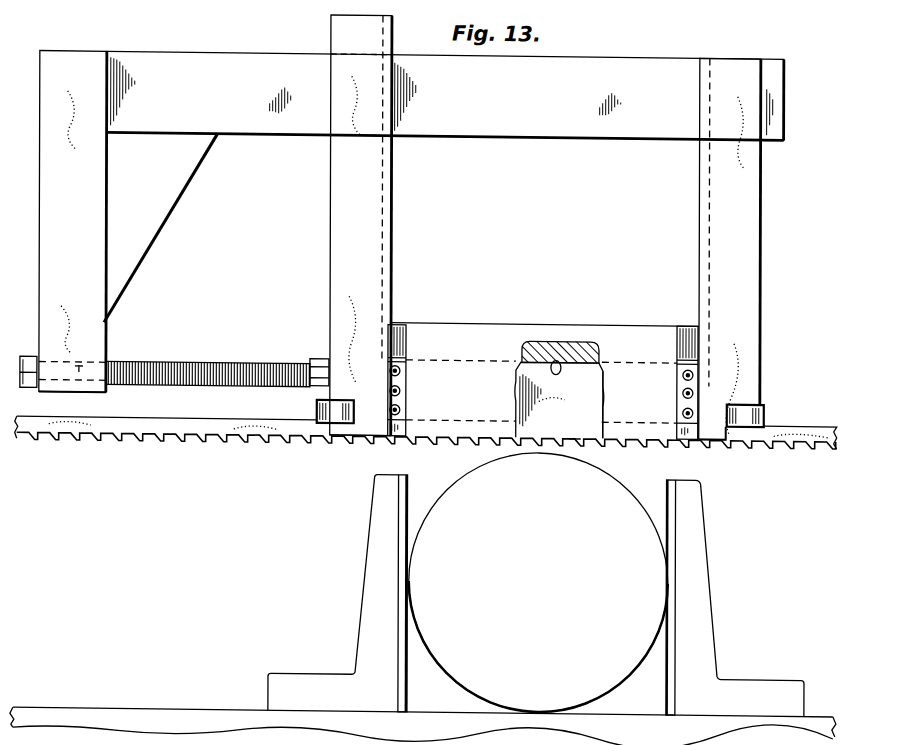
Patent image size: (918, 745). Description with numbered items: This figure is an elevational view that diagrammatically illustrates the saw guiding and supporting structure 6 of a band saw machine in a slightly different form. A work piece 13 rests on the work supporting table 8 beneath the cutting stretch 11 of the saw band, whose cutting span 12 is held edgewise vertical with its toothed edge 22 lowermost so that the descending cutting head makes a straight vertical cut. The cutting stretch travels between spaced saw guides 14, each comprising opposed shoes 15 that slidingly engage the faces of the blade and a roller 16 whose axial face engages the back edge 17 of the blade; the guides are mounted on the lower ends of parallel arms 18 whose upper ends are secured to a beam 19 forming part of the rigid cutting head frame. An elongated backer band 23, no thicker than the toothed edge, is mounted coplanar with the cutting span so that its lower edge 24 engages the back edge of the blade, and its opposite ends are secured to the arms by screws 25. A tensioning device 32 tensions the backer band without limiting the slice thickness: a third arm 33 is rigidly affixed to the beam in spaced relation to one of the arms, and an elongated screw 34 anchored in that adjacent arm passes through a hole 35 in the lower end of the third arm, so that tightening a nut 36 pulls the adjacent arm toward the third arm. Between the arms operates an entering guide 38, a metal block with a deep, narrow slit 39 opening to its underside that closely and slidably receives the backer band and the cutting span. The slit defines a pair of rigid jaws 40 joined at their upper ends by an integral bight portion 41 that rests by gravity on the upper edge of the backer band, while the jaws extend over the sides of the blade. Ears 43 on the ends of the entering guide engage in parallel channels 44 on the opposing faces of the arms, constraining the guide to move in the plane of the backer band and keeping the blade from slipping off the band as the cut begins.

The saw guiding and supporting structure 6 is at (797, 226).
The work supporting table 8 is at (460, 687).
The cutting stretch 11 is at (247, 424).
The cutting span 12 is at (397, 435).
The work piece 13 is at (549, 599).
The saw guides 14 is at (337, 456).
The shoes 15 is at (330, 431).
The roller 16 is at (318, 403).
The back edge 17 is at (233, 397).
The arms 18 is at (377, 185).
The beam 19 is at (268, 63).
The toothed edge 22 is at (293, 437).
The backer band 23 is at (587, 393).
The lower edge of the backer band 24 is at (588, 433).
The screws 25 is at (400, 402).
The tensioning device 32 is at (181, 405).
The third arm 33 is at (83, 197).
The screw 34 is at (192, 336).
The hole 35 is at (100, 359).
The nut 36 is at (28, 355).
The entering guide 38 is at (458, 279).
The slit 39 is at (555, 356).
The jaws 40 is at (503, 401).
The bight portion 41 is at (545, 333).
The ears 43 is at (398, 332).
The channels 44 is at (383, 252).